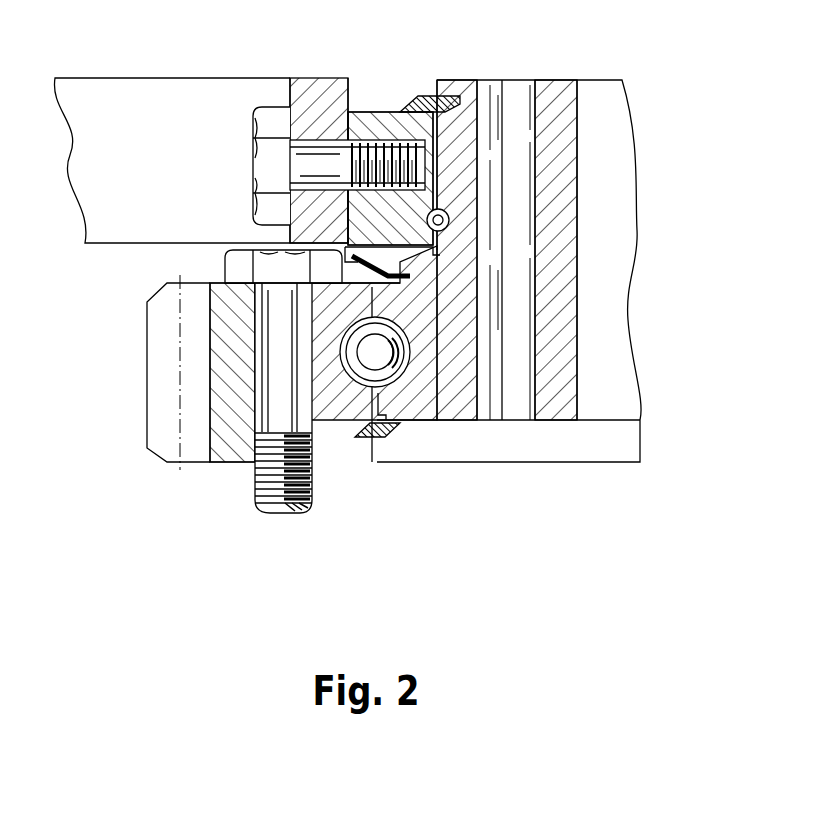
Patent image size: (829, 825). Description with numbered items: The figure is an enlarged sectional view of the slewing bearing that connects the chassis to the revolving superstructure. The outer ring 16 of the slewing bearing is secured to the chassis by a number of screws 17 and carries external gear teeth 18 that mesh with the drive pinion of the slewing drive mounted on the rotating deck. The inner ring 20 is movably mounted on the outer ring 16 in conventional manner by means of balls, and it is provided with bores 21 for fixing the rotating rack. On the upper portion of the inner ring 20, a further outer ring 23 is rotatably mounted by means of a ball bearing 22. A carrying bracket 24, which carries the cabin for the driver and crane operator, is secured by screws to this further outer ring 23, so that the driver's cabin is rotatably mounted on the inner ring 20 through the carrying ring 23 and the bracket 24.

The outer ring 16 is at (235, 437).
The screws 17 is at (283, 402).
The external gear teeth 18 is at (160, 343).
The inner ring 20 is at (449, 382).
The bores 21 is at (512, 327).
The ball bearing 22 is at (449, 222).
The further outer ring 23 is at (390, 112).
The carrying bracket 24 is at (132, 107).